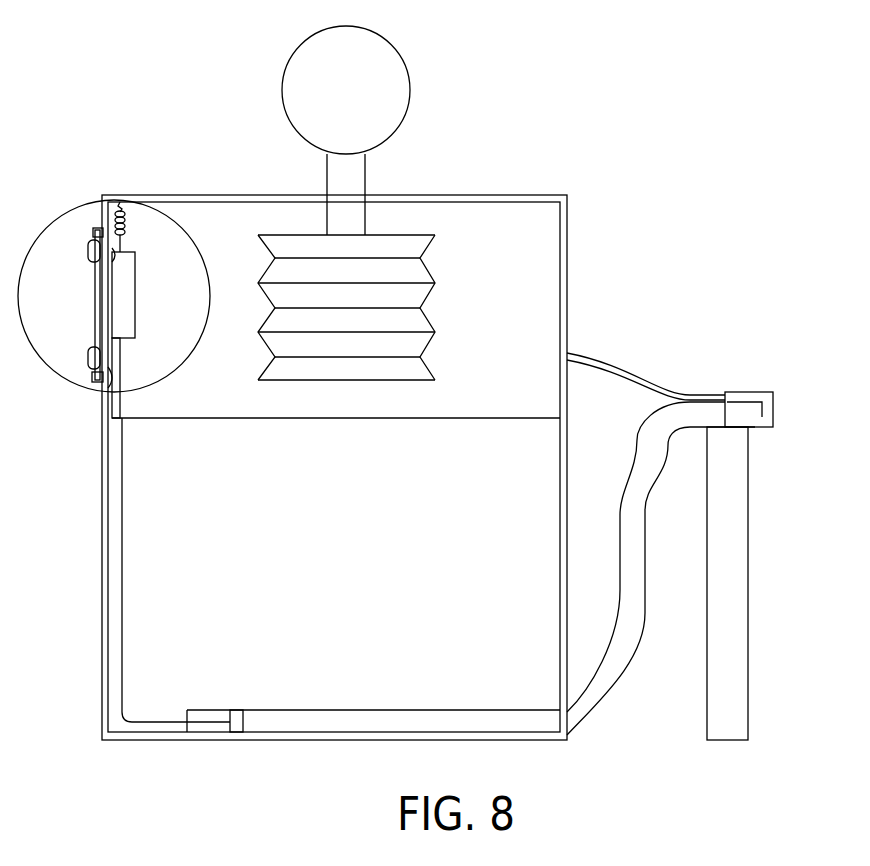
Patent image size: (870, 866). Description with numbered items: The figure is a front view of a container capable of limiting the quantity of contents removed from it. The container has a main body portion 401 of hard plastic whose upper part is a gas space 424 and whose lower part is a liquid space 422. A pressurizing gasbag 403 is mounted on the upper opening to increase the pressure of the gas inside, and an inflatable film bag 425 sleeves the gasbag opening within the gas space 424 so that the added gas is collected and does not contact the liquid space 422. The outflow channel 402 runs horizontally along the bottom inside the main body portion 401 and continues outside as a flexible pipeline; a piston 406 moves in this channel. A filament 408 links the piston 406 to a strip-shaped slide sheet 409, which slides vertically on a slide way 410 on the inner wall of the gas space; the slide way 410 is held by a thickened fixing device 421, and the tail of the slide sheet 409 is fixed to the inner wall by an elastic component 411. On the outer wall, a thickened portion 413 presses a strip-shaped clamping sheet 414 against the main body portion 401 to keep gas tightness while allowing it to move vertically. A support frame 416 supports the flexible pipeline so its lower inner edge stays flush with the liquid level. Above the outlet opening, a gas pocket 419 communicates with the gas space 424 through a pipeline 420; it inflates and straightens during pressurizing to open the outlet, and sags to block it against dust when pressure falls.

The main body portion 401 is at (522, 197).
The outflow channel 402 is at (750, 418).
The pressurizing gasbag 403 is at (360, 110).
The piston 406 is at (233, 725).
The filament 408 is at (127, 722).
The strip-shaped slide sheet 409 is at (125, 290).
The slide way 410 is at (110, 330).
The elastic component 411 is at (127, 230).
The thickened portion 413 is at (97, 253).
The strip-shaped clamping sheet 414 is at (98, 305).
The support frame 416 is at (730, 565).
The gas pocket 419 is at (757, 398).
The pipeline 420 is at (685, 393).
The thickened fixing device 421 is at (112, 373).
The liquid space 422 is at (177, 565).
The gas space 424 is at (497, 317).
The inflatable film bag 425 is at (373, 275).